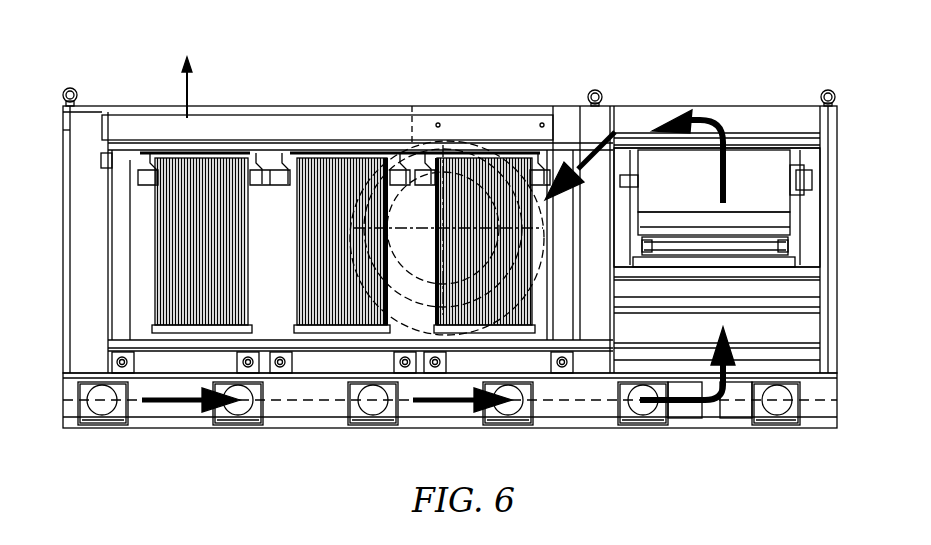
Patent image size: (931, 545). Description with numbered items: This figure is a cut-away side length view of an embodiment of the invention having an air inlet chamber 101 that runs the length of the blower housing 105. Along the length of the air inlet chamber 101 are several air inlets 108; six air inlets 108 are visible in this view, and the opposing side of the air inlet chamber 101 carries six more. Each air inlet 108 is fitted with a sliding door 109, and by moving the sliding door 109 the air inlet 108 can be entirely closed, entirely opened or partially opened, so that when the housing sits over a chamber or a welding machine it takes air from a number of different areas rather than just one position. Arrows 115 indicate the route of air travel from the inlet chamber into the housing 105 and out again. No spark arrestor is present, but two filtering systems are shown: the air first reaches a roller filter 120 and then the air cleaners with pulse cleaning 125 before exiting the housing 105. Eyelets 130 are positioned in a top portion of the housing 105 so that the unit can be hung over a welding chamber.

The air inlet chamber 101 is at (820, 405).
The blower housing 105 is at (727, 105).
The air inlet 108 is at (102, 405).
The sliding door 109 is at (687, 417).
The arrows 115 is at (185, 84).
The roller filter 120 is at (767, 233).
The air cleaners with pulse cleaning 125 is at (148, 211).
The eyelets 130 is at (78, 93).